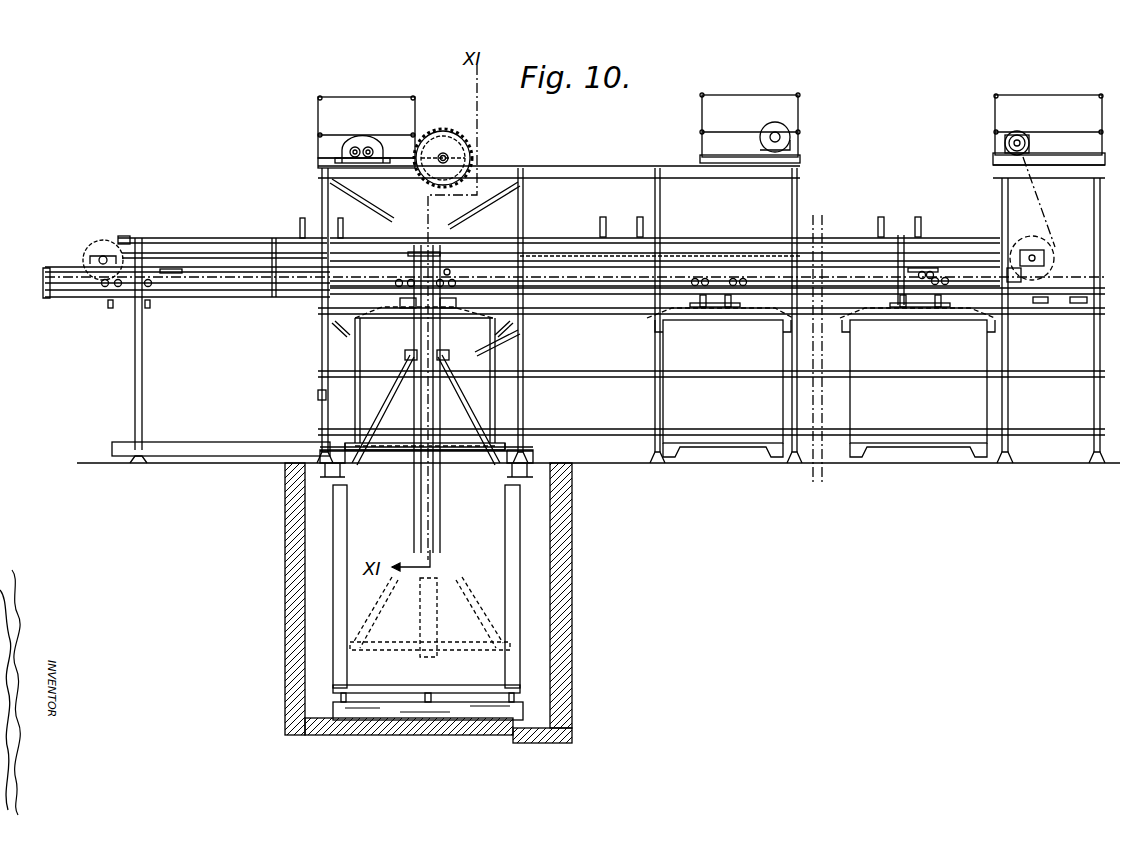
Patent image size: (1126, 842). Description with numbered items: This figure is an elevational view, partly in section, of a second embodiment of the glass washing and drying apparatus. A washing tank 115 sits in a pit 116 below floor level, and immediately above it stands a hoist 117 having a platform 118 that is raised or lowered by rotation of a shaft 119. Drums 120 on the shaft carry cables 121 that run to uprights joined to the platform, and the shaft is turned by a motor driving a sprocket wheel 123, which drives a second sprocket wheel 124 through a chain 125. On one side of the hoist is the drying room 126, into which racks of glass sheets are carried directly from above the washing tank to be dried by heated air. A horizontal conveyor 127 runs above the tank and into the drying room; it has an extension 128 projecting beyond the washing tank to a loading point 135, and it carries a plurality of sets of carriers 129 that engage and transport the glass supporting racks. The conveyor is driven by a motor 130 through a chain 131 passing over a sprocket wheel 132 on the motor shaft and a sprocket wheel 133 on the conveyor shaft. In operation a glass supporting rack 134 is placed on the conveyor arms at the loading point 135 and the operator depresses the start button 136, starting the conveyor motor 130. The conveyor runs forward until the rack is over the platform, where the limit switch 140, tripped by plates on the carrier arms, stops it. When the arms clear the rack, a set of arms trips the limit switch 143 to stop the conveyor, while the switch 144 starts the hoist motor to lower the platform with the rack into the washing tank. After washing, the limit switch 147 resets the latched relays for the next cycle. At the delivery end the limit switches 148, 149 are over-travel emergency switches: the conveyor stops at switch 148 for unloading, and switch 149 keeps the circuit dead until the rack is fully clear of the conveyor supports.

The washing tank 115 is at (500, 575).
The pit 116 is at (540, 634).
The hoist 117 is at (366, 200).
The platform 118 is at (465, 452).
The shaft 119 is at (453, 157).
The drums 120 is at (448, 142).
The cables 121 is at (428, 210).
The sprocket wheel 123 is at (368, 147).
The sprocket wheel 124 is at (432, 135).
The chain 125 is at (397, 140).
The drying room 126 is at (691, 381).
The conveyor 127 is at (556, 243).
The extension 128 is at (200, 243).
The carriers 129 is at (102, 290).
The motor 130 is at (1030, 135).
The chain 131 is at (1040, 205).
The sprocket wheel 132 is at (1032, 143).
The sprocket wheel 133 is at (1052, 248).
The glass supporting rack 134 is at (388, 460).
The loading point 135 is at (221, 350).
The start button 136 is at (318, 396).
The limit switch 140 is at (447, 272).
The limit switch 143 is at (921, 272).
The switch 144 is at (941, 278).
The limit switch 147 is at (1017, 273).
The limit switch 148 is at (1040, 304).
The limit switch 149 is at (1080, 304).